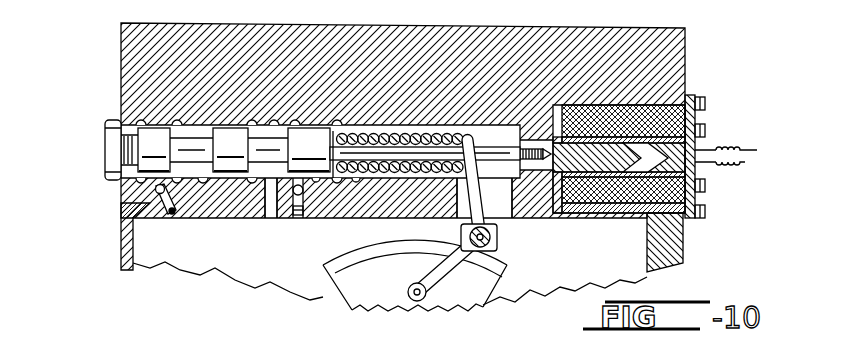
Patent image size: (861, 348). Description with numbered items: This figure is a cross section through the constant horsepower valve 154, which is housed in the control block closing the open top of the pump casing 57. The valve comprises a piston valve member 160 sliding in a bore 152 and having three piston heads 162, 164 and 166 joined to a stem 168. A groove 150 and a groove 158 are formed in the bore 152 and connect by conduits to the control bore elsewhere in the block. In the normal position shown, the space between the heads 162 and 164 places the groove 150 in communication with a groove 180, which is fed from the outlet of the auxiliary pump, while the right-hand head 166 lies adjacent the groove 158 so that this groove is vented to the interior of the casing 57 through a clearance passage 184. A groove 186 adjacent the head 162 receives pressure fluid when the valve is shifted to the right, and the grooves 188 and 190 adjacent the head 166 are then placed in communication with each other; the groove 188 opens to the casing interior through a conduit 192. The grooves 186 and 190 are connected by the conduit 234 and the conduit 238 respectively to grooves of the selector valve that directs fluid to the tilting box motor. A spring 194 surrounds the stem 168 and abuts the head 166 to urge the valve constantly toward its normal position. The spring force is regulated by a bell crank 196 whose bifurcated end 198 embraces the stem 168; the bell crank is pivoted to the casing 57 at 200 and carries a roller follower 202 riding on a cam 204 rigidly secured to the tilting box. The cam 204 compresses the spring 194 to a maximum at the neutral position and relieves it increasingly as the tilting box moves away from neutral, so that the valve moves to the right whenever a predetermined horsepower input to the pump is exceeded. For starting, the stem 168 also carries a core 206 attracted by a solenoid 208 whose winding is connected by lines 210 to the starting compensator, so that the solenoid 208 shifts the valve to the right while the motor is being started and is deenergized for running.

The casing 57 is at (122, 256).
The groove 150 is at (175, 125).
The bore 152 is at (504, 120).
The constant horsepower valve 154 is at (244, 180).
The groove 158 is at (357, 180).
The piston valve member 160 is at (316, 180).
The piston head 162 is at (154, 150).
The piston head 164 is at (230, 150).
The piston head 166 is at (309, 150).
The stem 168 is at (514, 152).
The groove 180 is at (202, 180).
The clearance passage 184 is at (478, 217).
The groove 186 is at (156, 186).
The groove 188 is at (274, 127).
The groove 190 is at (296, 127).
The conduit 192 is at (283, 220).
The spring 194 is at (398, 173).
The bell crank 196 is at (504, 223).
The bifurcated end 198 is at (470, 168).
The pivot 200 is at (499, 250).
The roller follower 202 is at (408, 293).
The cam 204 is at (415, 275).
The core 206 is at (547, 180).
The solenoid 208 is at (630, 198).
The lines 210 is at (745, 162).
The conduit 234 is at (125, 203).
The conduit 238 is at (305, 218).